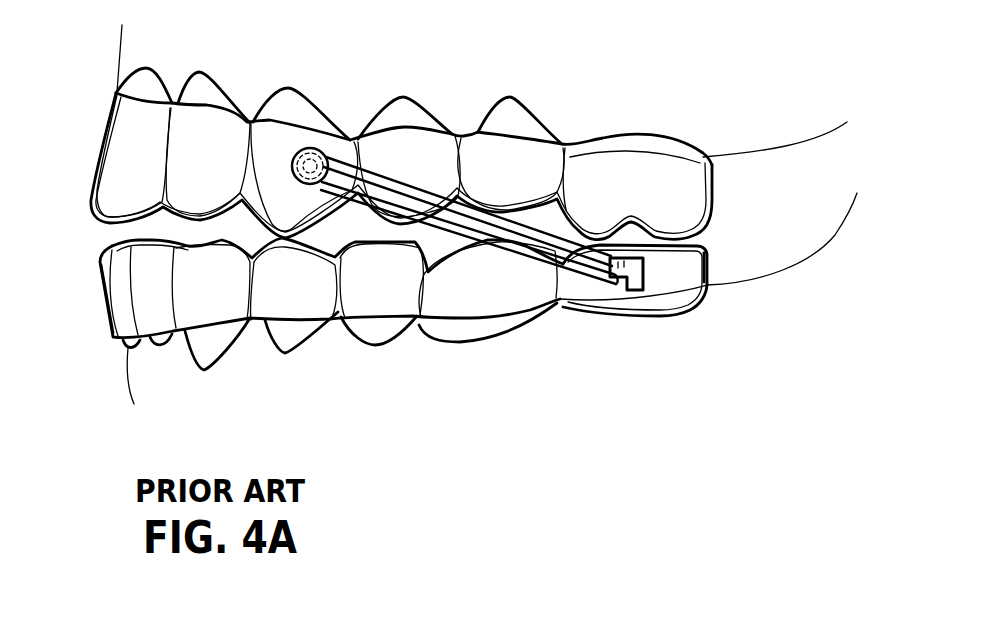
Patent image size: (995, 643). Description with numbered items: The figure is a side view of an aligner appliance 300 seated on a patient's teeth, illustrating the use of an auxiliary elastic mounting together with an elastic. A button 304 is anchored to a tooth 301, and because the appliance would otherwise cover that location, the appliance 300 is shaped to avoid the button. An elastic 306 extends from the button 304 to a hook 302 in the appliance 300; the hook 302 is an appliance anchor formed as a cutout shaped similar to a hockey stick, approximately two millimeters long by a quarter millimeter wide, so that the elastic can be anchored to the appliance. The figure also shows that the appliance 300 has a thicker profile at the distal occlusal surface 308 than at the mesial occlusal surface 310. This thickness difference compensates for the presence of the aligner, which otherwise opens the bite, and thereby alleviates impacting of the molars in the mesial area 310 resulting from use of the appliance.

The appliance 300 is at (207, 103).
The tooth 301 is at (530, 123).
The hook 302 is at (633, 292).
The button 304 is at (310, 148).
The elastic 306 is at (421, 182).
The distal occlusal surface 308 is at (105, 288).
The mesial occlusal surface 310 is at (703, 263).